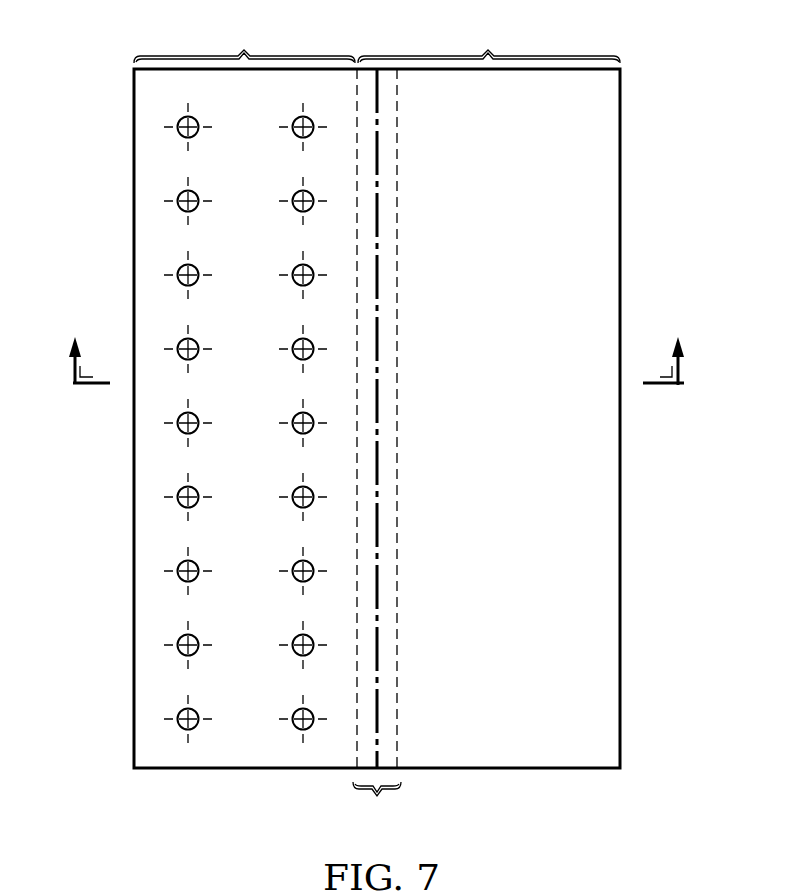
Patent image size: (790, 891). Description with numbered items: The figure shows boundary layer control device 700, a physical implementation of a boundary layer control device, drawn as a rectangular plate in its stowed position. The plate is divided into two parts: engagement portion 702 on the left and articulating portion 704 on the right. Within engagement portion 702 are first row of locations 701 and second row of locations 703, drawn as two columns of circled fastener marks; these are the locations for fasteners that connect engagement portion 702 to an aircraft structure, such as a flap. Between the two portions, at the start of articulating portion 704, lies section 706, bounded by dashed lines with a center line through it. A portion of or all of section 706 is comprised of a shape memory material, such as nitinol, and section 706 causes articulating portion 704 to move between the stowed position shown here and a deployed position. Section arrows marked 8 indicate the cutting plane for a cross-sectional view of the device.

The boundary layer control device 700 is at (133, 166).
The first row of locations 701 is at (175, 781).
The engagement portion 702 is at (244, 38).
The second row of locations 703 is at (291, 781).
The articulating portion 704 is at (489, 38).
The section 706 is at (377, 451).
The section line for FIG. 8 is at (378, 345).